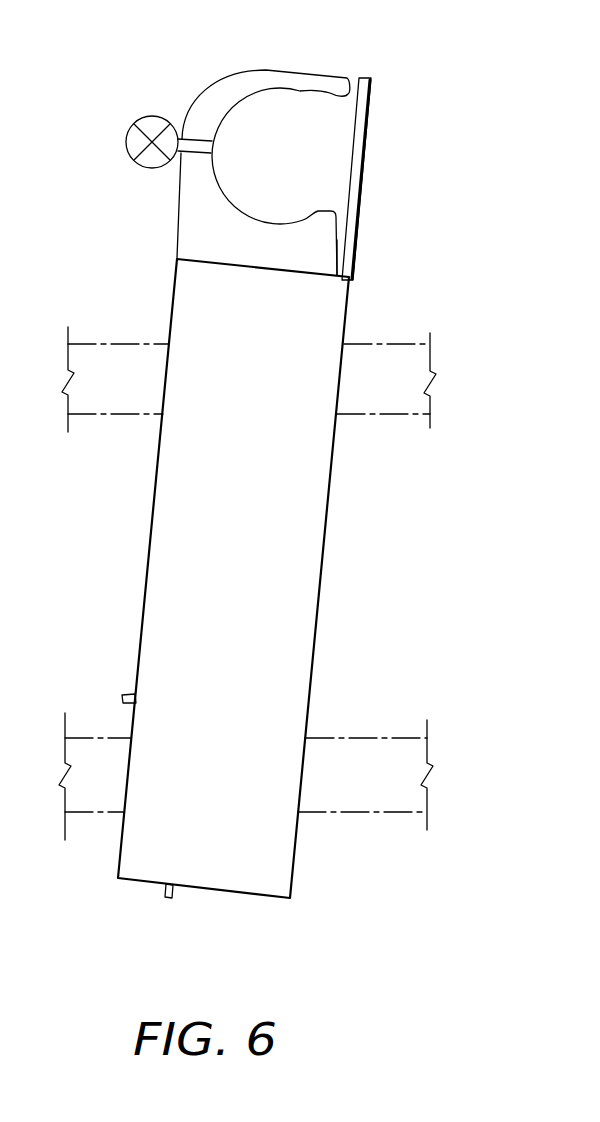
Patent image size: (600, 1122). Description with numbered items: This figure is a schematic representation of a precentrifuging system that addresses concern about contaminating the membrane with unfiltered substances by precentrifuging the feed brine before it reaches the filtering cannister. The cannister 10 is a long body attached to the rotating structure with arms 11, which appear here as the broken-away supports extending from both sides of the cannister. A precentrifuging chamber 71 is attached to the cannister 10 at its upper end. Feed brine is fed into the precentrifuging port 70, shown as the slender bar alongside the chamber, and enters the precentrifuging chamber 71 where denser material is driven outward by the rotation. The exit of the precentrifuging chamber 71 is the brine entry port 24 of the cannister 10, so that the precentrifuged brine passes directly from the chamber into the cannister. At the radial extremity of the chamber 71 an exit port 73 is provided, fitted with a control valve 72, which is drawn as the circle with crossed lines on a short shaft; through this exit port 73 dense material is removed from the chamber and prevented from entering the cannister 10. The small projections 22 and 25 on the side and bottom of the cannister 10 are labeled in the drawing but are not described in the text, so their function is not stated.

The cannister 10 is at (187, 505).
The arms 11 is at (385, 357).
The stop tab 22 is at (127, 694).
The brine entry port 24 is at (338, 264).
The locating peg 25 is at (173, 889).
The precentrifuging port 70 is at (353, 77).
The precentrifuging chamber 71 is at (270, 150).
The control valve 72 is at (130, 128).
The exit port 73 is at (202, 141).